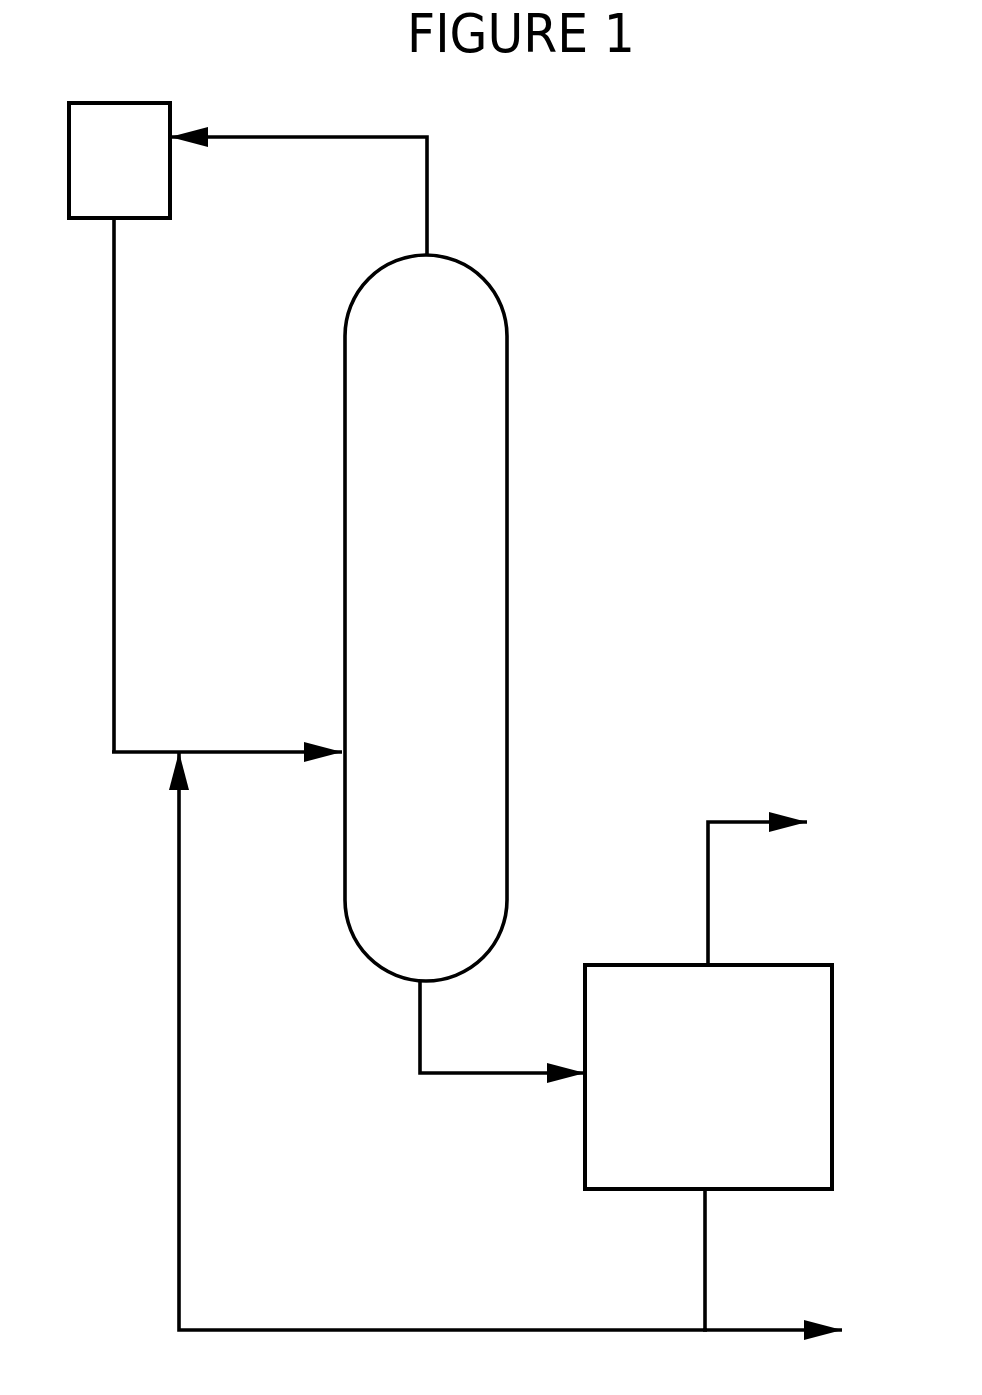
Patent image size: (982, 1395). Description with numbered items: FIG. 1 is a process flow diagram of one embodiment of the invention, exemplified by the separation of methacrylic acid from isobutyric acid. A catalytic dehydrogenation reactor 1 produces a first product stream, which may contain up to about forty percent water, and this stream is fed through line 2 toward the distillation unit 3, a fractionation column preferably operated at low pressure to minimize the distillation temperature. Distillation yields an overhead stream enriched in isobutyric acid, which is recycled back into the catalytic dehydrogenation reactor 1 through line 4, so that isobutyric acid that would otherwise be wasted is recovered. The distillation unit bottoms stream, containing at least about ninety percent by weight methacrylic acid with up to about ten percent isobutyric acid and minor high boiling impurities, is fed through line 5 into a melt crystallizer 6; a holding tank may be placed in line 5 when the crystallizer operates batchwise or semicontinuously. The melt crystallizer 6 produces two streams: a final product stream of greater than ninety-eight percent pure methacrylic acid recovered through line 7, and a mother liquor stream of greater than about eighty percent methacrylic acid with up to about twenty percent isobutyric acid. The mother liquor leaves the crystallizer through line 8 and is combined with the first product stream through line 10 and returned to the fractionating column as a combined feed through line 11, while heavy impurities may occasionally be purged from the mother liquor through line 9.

The catalytic dehydrogenation reactor 1 is at (119, 160).
The line 2 is at (97, 485).
The distillation unit 3 is at (426, 618).
The line 4 is at (322, 195).
The line 5 is at (481, 1027).
The melt crystallizer 6 is at (708, 1077).
The line 7 is at (735, 893).
The liquid outlet line 8 is at (685, 1259).
The line 9 is at (772, 1305).
The line 10 is at (443, 1041).
The line 11 is at (227, 727).